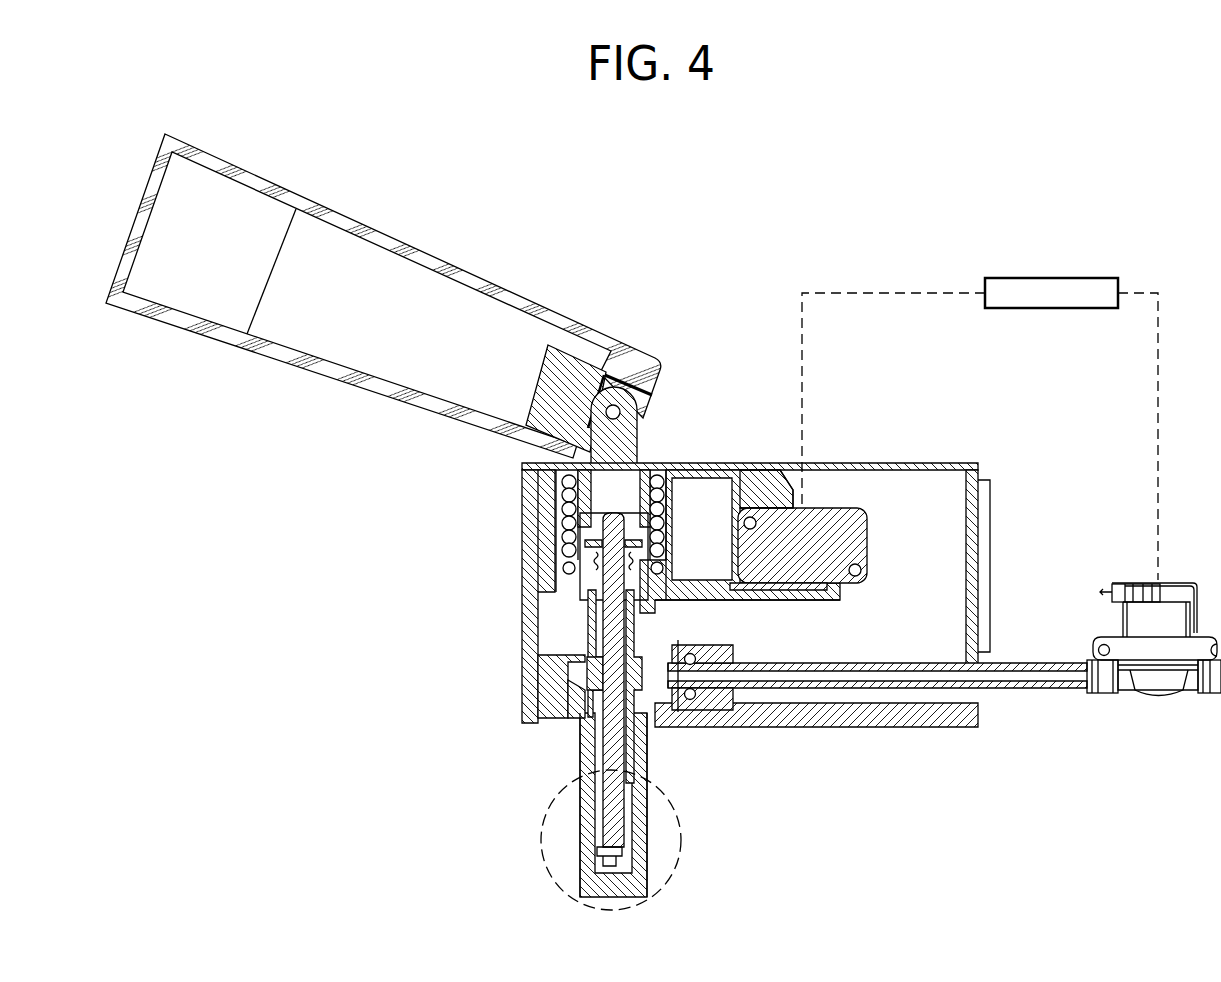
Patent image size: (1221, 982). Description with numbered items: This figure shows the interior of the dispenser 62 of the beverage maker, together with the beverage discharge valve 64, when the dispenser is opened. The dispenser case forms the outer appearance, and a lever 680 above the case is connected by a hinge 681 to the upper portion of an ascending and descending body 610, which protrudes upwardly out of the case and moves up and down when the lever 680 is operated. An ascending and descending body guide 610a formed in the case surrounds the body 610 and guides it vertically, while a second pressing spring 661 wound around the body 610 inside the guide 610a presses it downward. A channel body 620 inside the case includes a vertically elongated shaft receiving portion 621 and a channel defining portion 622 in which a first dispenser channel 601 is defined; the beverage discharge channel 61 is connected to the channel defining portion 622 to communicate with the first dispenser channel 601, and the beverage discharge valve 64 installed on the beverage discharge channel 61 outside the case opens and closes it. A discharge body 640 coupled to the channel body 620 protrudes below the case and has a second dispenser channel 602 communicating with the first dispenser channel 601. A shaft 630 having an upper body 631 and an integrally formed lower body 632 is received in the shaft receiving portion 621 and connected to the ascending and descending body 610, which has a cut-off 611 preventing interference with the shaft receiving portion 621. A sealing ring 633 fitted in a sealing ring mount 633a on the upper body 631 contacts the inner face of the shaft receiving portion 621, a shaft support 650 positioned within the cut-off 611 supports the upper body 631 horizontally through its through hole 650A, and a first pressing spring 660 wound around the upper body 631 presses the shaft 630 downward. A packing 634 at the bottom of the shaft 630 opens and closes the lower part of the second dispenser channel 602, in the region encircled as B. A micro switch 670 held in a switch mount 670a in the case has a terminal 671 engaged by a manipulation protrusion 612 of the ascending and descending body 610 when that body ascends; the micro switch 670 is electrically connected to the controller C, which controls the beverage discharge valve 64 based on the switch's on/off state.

The dispenser 62 is at (183, 110).
The lever 680 is at (282, 188).
The hinge 681 is at (616, 405).
The ascending and descending body 610 is at (604, 384).
The cut-off 611 is at (672, 520).
The first pressing spring 660 is at (664, 562).
The switch mount 670a is at (770, 490).
The micro switch 670 is at (761, 638).
The terminal 671 is at (805, 592).
The manipulation protrusion 612 is at (718, 598).
The controller C is at (1050, 278).
The beverage discharge valve 64 is at (1178, 583).
The beverage discharge channel 61 is at (1032, 690).
The second pressing spring 661 is at (565, 535).
The ascending and descending body guide 610a is at (580, 530).
The through hole 650A is at (590, 557).
The shaft support 650 is at (524, 564).
The shaft 630 is at (540, 732).
The upper body 631 is at (590, 604).
The lower body 632 is at (585, 760).
The sealing ring 633 is at (646, 702).
The sealing ring mount 633a is at (588, 672).
The packing 634 is at (611, 868).
The discharge body 640 is at (587, 820).
The detail region B is at (544, 847).
The second dispenser channel 602 is at (628, 798).
The first dispenser channel 601 is at (698, 714).
The channel body 620 is at (736, 734).
The shaft receiving portion 621 is at (737, 662).
The channel defining portion 622 is at (703, 707).